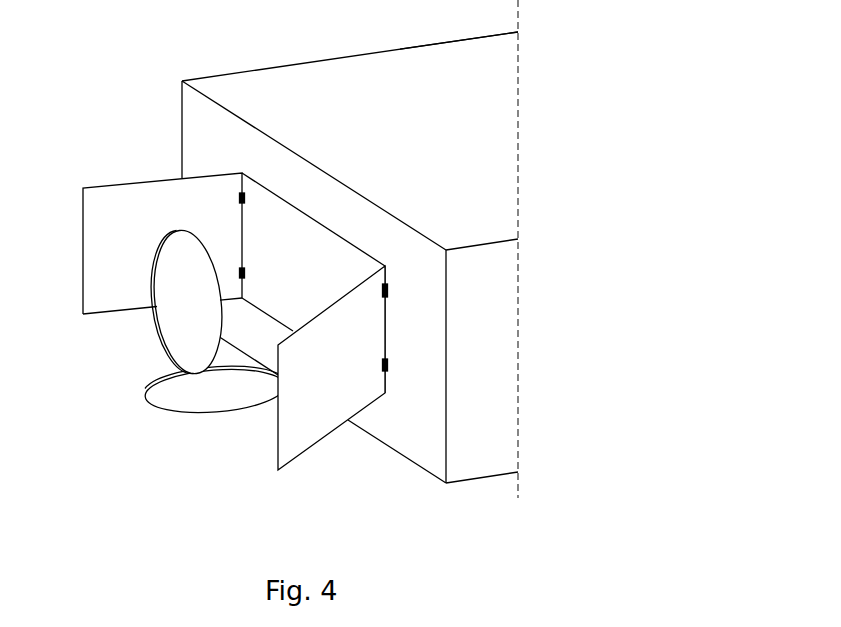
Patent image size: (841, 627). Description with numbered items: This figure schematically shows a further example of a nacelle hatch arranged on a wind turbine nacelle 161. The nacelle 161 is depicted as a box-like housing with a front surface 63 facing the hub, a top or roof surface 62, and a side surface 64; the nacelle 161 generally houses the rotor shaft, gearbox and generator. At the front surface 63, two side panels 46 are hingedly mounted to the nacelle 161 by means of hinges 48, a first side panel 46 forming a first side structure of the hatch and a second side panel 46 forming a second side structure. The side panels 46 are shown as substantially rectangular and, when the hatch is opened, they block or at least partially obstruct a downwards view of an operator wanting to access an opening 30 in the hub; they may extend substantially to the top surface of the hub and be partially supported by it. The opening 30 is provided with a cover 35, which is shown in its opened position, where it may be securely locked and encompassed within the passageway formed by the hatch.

The top surface 62 is at (275, 67).
The nacelle 161 is at (412, 48).
The front surface of the nacelle 63 is at (193, 113).
The side surface 64 is at (472, 465).
The side panel 46 is at (97, 200).
The hinges 48 is at (388, 293).
The cover 35 is at (175, 322).
The opening 30 is at (162, 396).